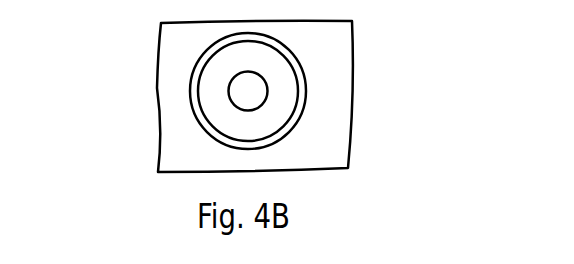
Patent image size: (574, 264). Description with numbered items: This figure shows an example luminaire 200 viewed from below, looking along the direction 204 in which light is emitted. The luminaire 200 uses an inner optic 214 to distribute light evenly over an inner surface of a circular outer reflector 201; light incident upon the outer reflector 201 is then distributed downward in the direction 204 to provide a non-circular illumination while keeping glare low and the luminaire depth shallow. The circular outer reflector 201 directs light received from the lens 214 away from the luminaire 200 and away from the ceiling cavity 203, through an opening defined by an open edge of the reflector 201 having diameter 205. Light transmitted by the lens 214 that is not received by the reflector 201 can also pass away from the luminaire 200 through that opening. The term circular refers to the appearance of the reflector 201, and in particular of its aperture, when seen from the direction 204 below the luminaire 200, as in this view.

The luminaire 200 is at (201, 125).
The circular outer reflector 201 is at (215, 96).
The ceiling cavity 203 is at (322, 97).
The direction 204 is at (350, 47).
The diameter 205 is at (297, 124).
The inner optic 214 is at (231, 80).